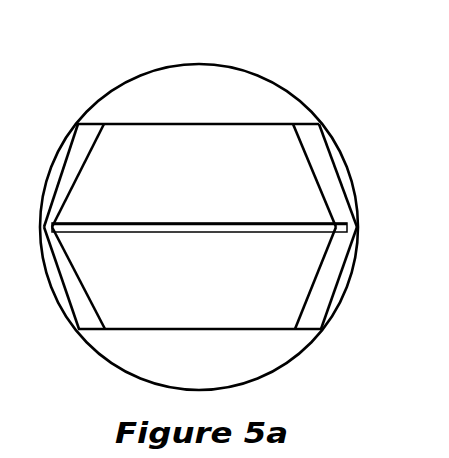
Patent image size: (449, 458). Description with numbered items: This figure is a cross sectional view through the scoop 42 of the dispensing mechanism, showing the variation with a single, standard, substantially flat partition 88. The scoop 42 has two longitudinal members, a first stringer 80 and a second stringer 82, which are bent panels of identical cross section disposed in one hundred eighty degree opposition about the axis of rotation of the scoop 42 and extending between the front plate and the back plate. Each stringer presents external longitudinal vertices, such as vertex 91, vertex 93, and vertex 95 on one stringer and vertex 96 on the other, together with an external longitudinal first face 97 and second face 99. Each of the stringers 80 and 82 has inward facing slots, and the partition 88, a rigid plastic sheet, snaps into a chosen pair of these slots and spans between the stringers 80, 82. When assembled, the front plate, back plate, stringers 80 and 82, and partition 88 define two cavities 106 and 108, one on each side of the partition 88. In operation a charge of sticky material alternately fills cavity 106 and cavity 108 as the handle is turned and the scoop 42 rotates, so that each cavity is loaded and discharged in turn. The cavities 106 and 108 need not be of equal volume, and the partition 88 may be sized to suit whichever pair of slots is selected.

The scoop 42 is at (283, 58).
The partition 88 is at (229, 217).
The cavity 106 is at (169, 150).
The cavity 108 is at (189, 310).
The first stringer 80 is at (326, 162).
The second stringer 82 is at (69, 182).
The first face 97 is at (336, 137).
The second face 99 is at (352, 283).
The external longitudinal vertex 96 is at (77, 112).
The external longitudinal vertex 91 is at (323, 115).
The external longitudinal vertex 93 is at (372, 226).
The external longitudinal vertex 95 is at (327, 340).